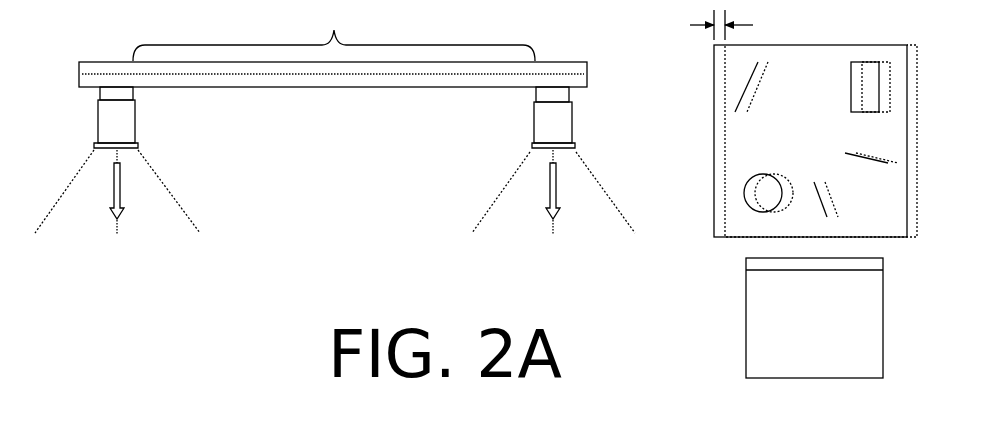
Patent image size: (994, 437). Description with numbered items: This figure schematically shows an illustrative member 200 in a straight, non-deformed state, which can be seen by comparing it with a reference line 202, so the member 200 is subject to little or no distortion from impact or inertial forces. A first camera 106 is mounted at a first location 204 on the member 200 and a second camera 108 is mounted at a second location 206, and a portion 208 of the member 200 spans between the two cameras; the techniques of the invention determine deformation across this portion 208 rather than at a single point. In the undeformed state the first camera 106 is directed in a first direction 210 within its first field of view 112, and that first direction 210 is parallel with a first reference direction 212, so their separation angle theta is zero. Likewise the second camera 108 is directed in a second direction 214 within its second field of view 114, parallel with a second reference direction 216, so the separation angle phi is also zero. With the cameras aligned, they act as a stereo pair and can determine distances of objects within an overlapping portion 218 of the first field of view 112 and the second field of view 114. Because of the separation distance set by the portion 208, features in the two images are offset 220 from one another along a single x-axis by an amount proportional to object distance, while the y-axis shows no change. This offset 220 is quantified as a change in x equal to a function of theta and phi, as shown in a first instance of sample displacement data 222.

The member 200 is at (108, 61).
The reference line 202 is at (248, 76).
The first location 204 is at (133, 88).
The second location 206 is at (536, 90).
The first camera 106 is at (135, 133).
The second camera 108 is at (534, 128).
The first field of view 112 is at (193, 219).
The second field of view 114 is at (480, 218).
The portion of the member 208 is at (334, 40).
The first direction 210 is at (119, 222).
The first reference direction 212 is at (116, 222).
The second direction 214 is at (555, 222).
The second reference direction 216 is at (552, 222).
The overlapping portion 218 is at (703, 146).
The offset 220 is at (701, 27).
The sample displacement data 222 is at (730, 354).